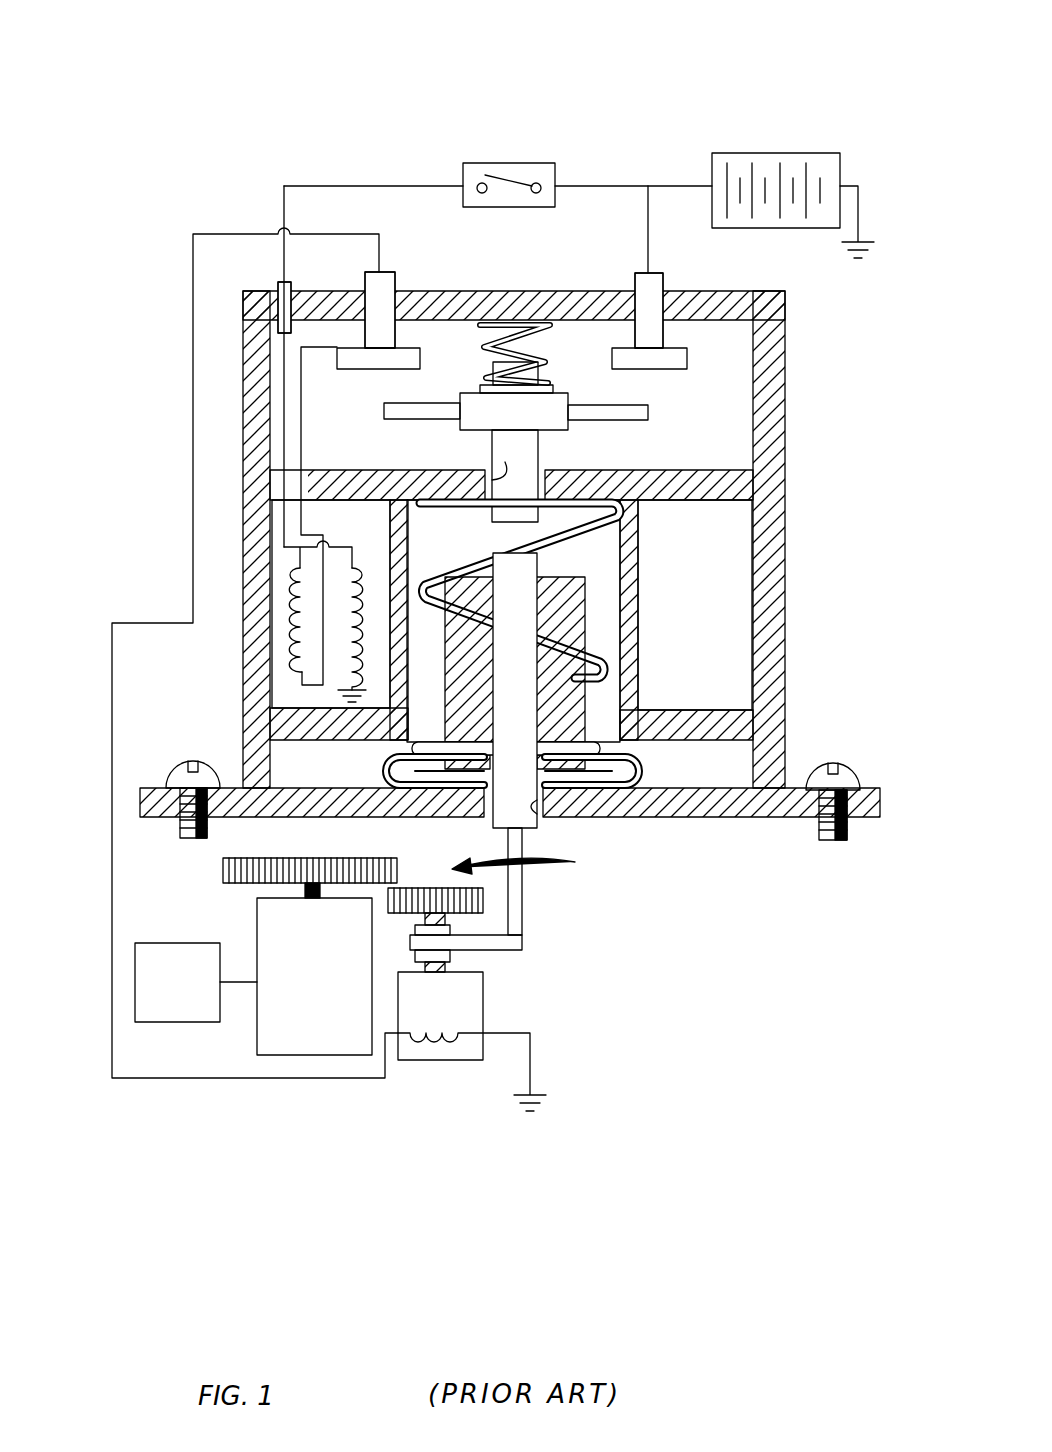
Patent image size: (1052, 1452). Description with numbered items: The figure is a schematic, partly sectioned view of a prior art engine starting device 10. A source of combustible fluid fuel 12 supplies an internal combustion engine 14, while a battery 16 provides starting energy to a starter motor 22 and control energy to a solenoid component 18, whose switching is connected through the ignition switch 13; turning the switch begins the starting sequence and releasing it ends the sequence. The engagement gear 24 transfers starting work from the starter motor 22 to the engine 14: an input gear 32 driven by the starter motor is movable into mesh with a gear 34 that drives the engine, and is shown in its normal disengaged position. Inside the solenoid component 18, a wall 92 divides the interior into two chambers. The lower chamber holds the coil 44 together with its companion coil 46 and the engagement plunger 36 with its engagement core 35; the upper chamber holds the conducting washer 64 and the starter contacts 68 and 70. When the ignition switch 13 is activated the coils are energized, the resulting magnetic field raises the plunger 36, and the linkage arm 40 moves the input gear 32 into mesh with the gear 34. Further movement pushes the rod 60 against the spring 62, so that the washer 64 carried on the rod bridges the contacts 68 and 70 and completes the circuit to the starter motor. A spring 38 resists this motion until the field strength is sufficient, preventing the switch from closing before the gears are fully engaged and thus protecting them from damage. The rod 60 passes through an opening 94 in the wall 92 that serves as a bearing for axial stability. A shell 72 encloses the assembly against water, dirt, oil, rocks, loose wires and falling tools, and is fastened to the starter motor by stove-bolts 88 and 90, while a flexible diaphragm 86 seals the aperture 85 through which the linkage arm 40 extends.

The prior art device 10 is at (114, 56).
The source of combustible fluid fuel 12 is at (198, 1010).
The ignition switch 13 is at (492, 163).
The internal combustion engine 14 is at (275, 925).
The battery 16 is at (760, 153).
The solenoid component 18 is at (786, 378).
The starter motor 22 is at (468, 1012).
The engagement gear 24 is at (539, 866).
The input gear 32 is at (470, 900).
The gear 34 is at (223, 866).
The engagement core 35 is at (568, 637).
The engagement plunger 36 is at (520, 605).
The spring 38 is at (620, 528).
The linkage arm 40 is at (517, 937).
The coil 44 is at (368, 585).
The coil 46 is at (290, 583).
The rod 60 is at (522, 462).
The spring 62 is at (548, 376).
The conducting washer 64 is at (645, 413).
The starter contact 68 is at (400, 355).
The starter contact 70 is at (635, 355).
The shell 72 is at (762, 548).
The aperture 85 is at (540, 812).
The flexible diaphragm 86 is at (642, 774).
The stove-bolt 88 is at (185, 768).
The stove-bolt 90 is at (845, 775).
The wall 92 is at (680, 482).
The opening 94 is at (505, 462).